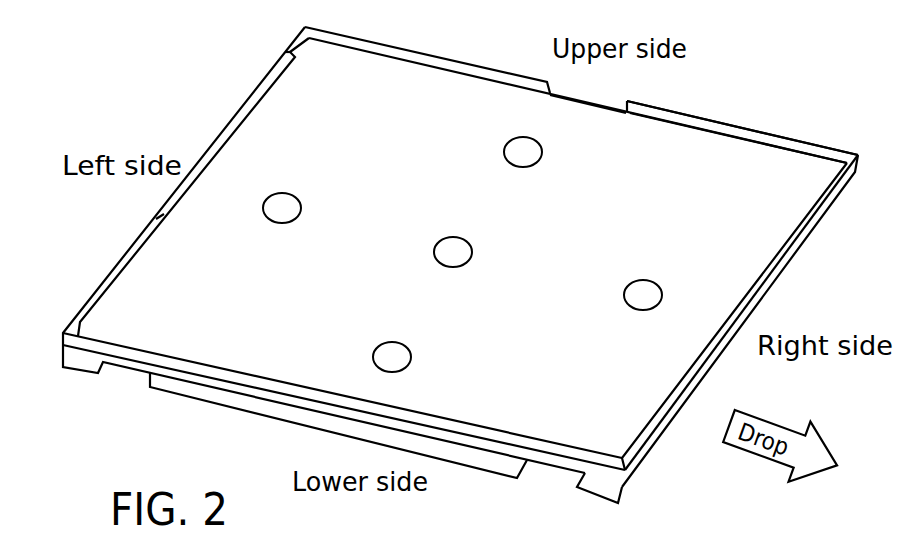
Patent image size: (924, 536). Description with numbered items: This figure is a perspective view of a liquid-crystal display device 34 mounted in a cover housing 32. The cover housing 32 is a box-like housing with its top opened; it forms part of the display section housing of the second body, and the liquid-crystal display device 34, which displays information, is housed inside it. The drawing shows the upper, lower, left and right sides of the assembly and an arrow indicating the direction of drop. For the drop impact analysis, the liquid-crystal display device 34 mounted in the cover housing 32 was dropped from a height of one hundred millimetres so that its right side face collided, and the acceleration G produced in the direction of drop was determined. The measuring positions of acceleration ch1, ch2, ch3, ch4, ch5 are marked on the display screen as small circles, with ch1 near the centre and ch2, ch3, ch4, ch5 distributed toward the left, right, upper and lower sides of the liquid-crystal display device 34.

The cover housing 32 is at (800, 250).
The liquid-crystal display device 34 is at (723, 145).
The measuring position of acceleration ch1 is at (472, 252).
The measuring position of acceleration ch2 is at (301, 208).
The measuring position of acceleration ch3 is at (662, 295).
The measuring position of acceleration ch4 is at (542, 152).
The measuring position of acceleration ch5 is at (411, 357).